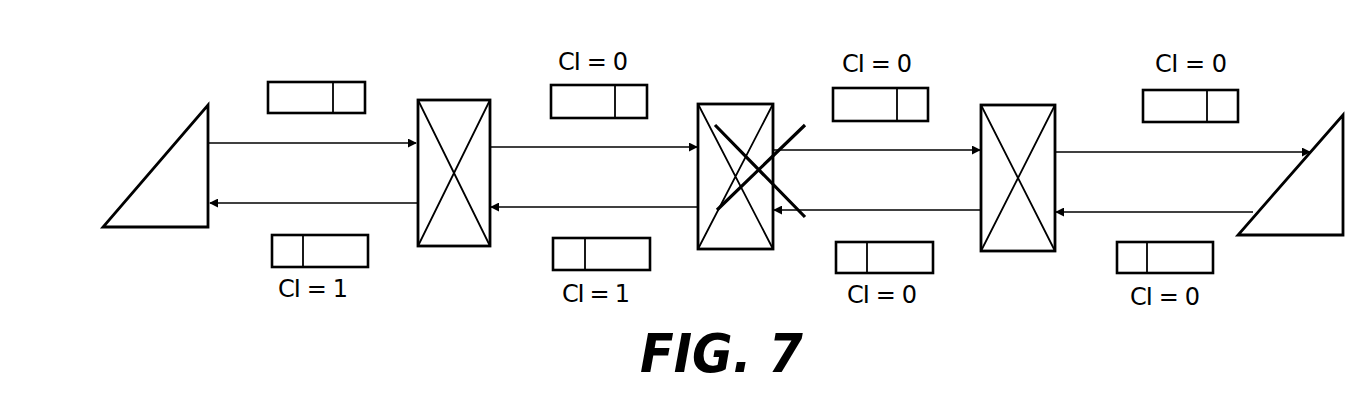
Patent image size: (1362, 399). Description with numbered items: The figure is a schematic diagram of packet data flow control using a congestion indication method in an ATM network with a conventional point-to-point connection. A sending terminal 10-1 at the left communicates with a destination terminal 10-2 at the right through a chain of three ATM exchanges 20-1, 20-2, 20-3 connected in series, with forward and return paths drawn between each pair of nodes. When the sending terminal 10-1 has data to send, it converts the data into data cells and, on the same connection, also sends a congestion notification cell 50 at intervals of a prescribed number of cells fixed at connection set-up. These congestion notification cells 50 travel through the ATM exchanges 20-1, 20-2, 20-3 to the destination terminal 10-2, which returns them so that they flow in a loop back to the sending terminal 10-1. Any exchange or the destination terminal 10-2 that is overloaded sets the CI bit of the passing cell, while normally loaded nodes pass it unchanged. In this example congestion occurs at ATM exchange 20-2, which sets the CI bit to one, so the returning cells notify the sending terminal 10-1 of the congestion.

The sending terminal 10-1 is at (148, 175).
The destination terminal 10-2 is at (1332, 117).
The ATM exchange 20-1 is at (457, 100).
The ATM exchange 20-2 is at (737, 104).
The ATM exchange 20-3 is at (1020, 105).
The congestion notification cell 50 is at (268, 88).